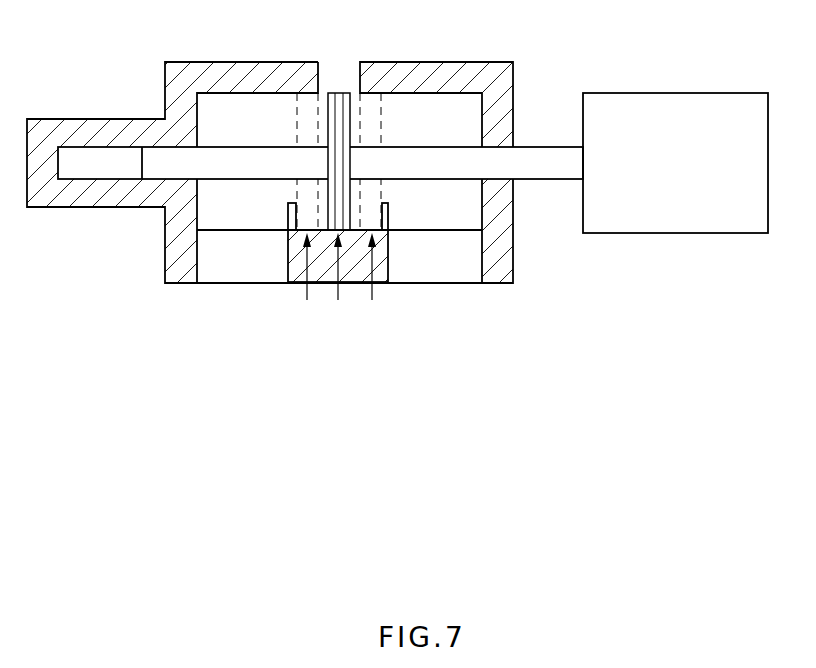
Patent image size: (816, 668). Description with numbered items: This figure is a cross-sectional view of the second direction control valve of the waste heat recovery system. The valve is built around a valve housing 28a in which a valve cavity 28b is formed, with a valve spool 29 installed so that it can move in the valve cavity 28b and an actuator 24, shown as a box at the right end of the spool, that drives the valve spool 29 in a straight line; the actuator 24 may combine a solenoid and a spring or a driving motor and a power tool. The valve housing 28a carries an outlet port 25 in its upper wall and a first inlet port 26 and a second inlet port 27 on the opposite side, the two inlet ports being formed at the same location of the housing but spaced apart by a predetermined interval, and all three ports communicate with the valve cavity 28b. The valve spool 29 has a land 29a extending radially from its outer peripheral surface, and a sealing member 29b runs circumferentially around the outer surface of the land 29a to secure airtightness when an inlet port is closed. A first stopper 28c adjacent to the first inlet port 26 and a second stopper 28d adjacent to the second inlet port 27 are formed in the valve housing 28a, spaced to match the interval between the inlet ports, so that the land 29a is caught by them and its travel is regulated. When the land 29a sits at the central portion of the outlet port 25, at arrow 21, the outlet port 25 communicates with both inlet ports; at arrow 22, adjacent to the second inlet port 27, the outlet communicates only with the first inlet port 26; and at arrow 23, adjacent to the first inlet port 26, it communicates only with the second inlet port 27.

The first position 21 is at (342, 280).
The second position 22 is at (309, 280).
The third position 23 is at (372, 280).
The actuator 24 is at (673, 233).
The outlet port 25 is at (342, 63).
The first inlet port 26 is at (463, 273).
The second inlet port 27 is at (213, 275).
The valve housing 28a is at (177, 245).
The valve cavity 28b is at (246, 205).
The first stopper 28c is at (287, 215).
The second stopper 28d is at (388, 213).
The valve spool 29 is at (445, 150).
The land 29a is at (352, 109).
The sealing member 29b is at (339, 96).